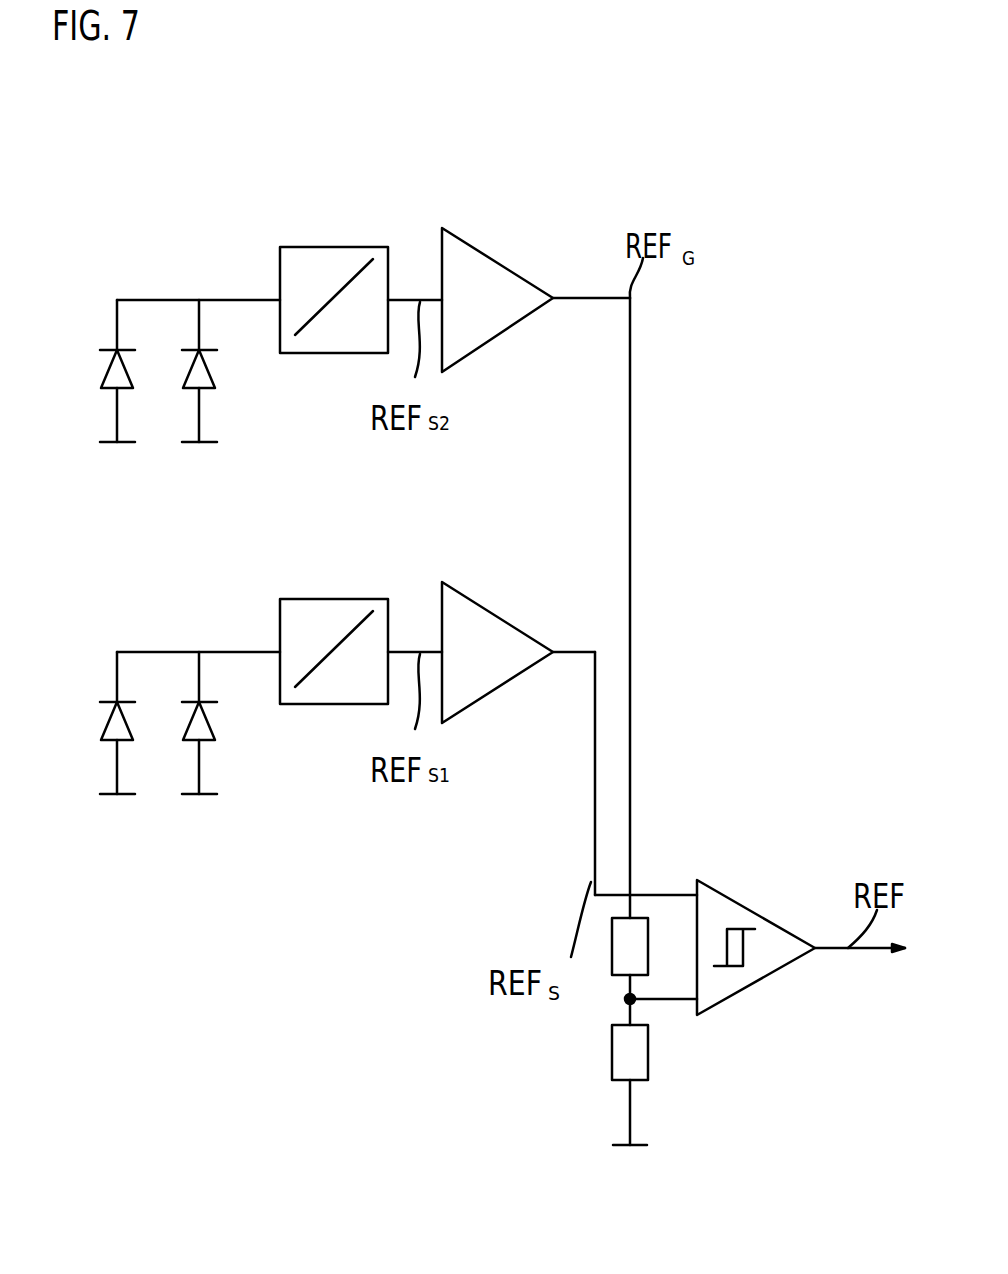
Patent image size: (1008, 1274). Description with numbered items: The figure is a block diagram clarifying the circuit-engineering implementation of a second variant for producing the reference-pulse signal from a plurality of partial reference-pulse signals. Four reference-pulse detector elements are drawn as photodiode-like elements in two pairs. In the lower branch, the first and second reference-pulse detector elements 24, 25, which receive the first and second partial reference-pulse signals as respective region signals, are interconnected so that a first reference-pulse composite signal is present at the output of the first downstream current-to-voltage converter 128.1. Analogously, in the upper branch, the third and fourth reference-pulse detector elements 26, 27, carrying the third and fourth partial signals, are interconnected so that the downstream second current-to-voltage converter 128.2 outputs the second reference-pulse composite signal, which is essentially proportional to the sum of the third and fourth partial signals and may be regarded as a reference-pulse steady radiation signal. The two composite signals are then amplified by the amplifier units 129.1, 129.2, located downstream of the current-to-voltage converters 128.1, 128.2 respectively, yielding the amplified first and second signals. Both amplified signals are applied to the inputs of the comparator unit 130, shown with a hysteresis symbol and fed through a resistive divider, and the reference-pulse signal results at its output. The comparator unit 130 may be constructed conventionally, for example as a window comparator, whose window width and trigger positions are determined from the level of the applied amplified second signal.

The first reference-pulse detector element 24 is at (92, 764).
The second reference-pulse detector element 25 is at (212, 759).
The third reference-pulse detector element 26 is at (92, 412).
The fourth reference-pulse detector element 27 is at (212, 407).
The first current-to-voltage converter 128.1 is at (332, 608).
The second current-to-voltage converter 128.2 is at (332, 255).
The first amplifier unit 129.1 is at (468, 608).
The second amplifier unit 129.2 is at (468, 255).
The comparator unit 130 is at (772, 965).